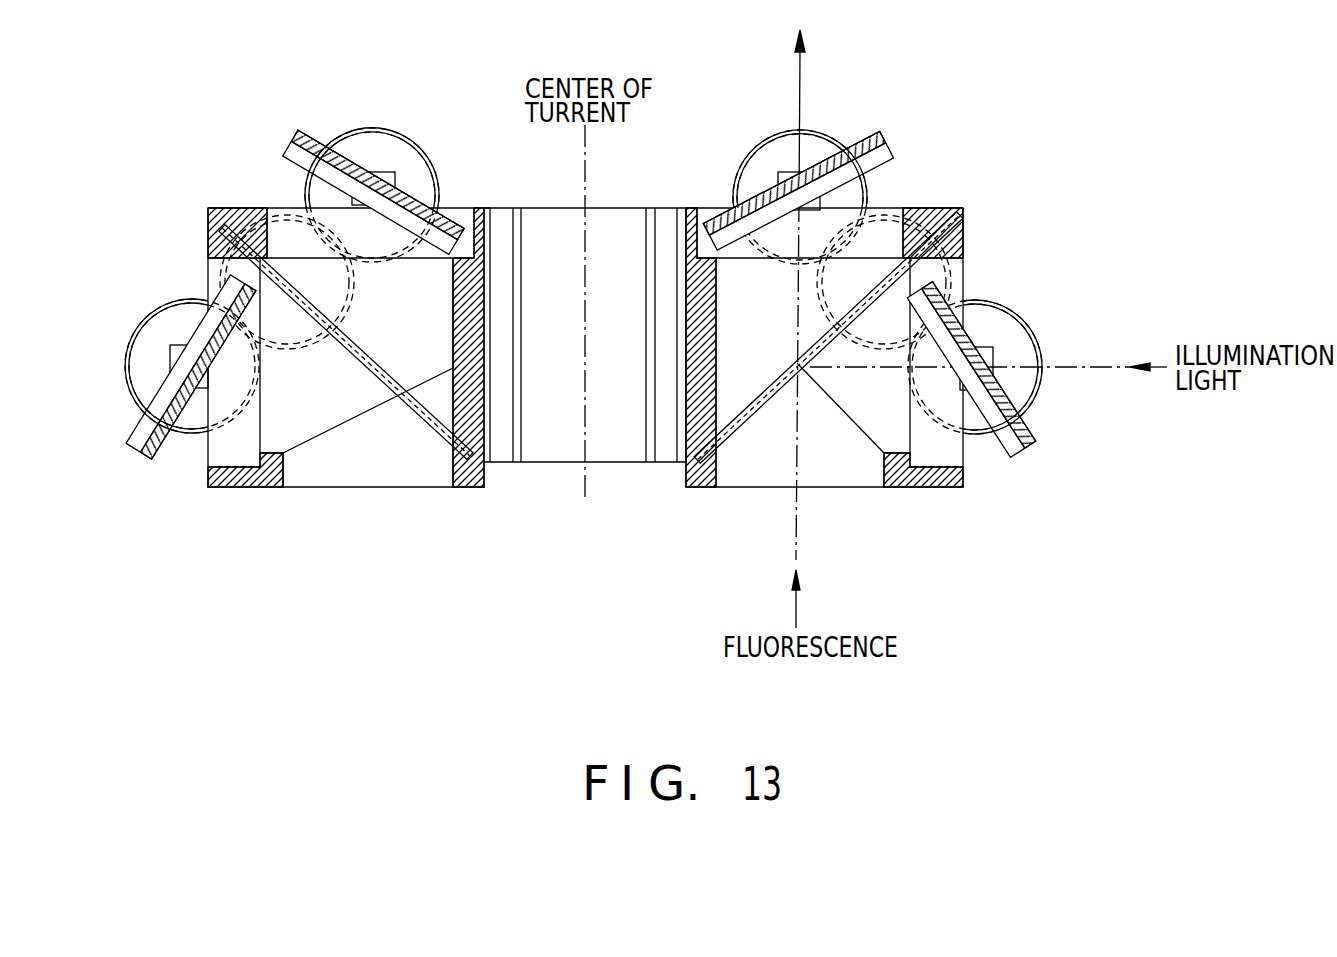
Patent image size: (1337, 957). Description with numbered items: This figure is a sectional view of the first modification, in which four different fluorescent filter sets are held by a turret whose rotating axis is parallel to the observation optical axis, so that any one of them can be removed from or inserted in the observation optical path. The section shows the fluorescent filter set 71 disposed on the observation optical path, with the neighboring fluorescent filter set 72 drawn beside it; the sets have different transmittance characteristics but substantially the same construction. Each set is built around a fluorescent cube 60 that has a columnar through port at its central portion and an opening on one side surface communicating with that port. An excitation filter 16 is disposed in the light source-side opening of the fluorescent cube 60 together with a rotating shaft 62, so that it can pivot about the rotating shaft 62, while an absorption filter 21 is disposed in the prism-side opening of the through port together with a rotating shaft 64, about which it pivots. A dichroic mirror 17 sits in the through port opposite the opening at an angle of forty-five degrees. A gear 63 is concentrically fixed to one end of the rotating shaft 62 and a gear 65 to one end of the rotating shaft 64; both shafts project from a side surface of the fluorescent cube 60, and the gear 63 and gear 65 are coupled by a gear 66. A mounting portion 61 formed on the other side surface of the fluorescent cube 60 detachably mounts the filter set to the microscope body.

The excitation filter 16 is at (1033, 450).
The dichroic mirror 17 is at (722, 438).
The absorption filter 21 is at (860, 137).
The fluorescent cube 60 is at (905, 487).
The mounting portion 61 is at (665, 452).
The rotating shaft 62 is at (1037, 382).
The gear 63 is at (1020, 320).
The rotating shaft 64 is at (827, 135).
The gear 65 is at (732, 172).
The gear 66 is at (893, 200).
The fluorescent filter set 71 is at (894, 300).
The fluorescent filter set 72 is at (192, 229).